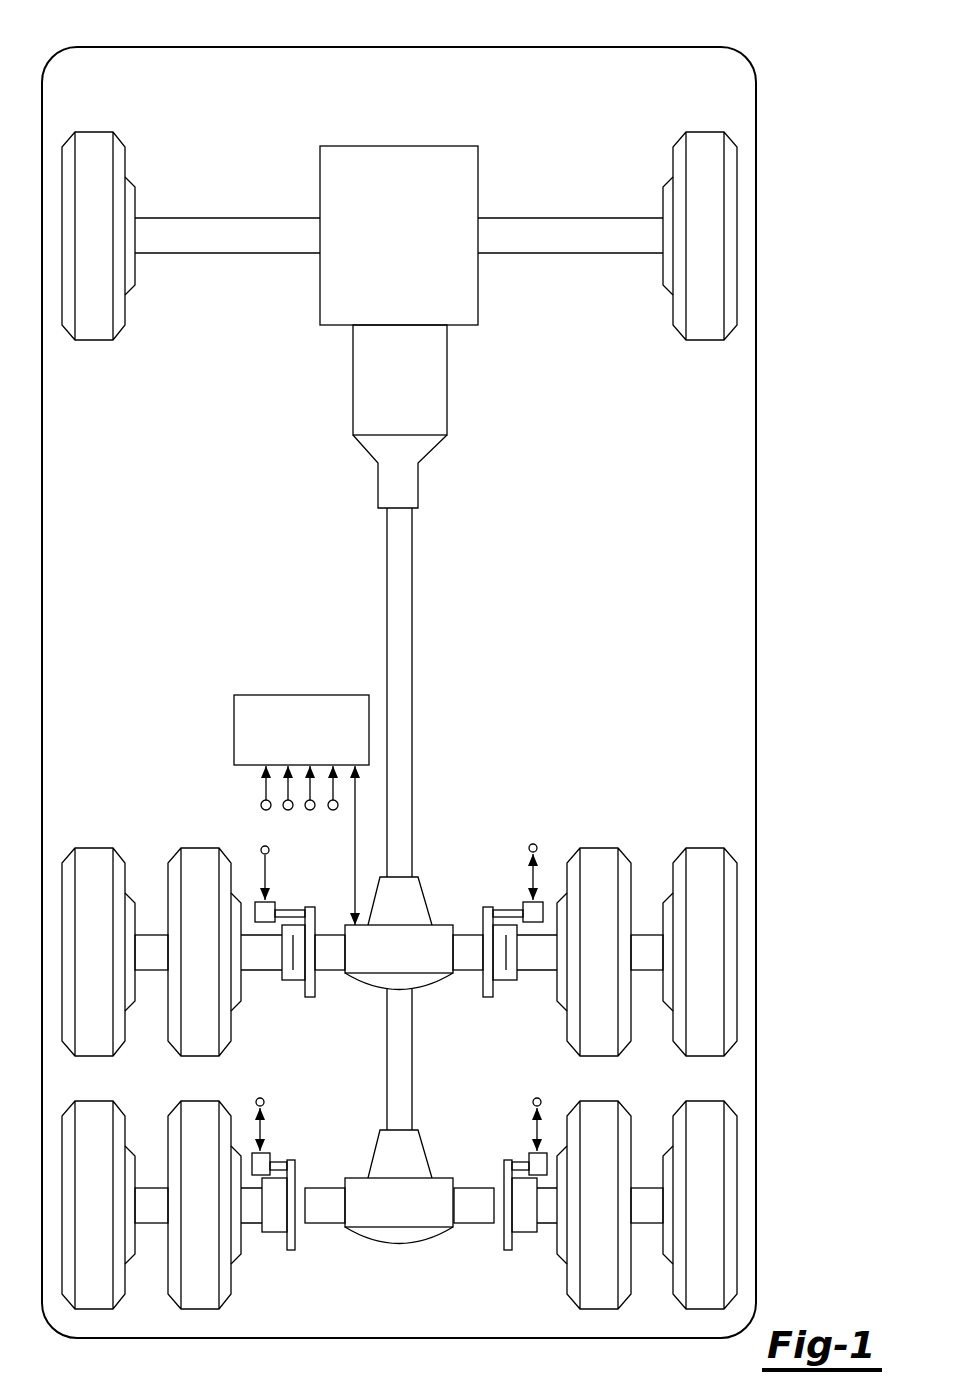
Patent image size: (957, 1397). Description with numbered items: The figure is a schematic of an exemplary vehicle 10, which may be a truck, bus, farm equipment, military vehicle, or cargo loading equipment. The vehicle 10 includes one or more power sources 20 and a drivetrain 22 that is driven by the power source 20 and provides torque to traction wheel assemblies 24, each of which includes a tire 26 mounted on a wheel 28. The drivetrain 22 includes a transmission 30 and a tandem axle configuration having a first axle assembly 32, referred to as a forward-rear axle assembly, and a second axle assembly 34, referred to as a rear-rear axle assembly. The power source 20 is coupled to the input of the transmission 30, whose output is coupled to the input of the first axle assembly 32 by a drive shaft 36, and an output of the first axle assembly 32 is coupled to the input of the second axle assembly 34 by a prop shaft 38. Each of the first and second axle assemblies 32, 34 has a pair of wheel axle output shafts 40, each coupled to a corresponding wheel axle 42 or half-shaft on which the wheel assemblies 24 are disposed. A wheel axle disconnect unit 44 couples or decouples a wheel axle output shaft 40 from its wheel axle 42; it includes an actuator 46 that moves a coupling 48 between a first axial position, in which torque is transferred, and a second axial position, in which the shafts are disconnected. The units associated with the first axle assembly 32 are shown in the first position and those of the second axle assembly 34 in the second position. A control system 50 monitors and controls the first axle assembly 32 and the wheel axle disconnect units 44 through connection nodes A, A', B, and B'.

The vehicle 10 is at (750, 55).
The power source 20 is at (408, 250).
The drivetrain 22 is at (340, 440).
The traction wheel assembly 24 is at (210, 1060).
The tire 26 is at (103, 966).
The wheel 28 is at (134, 985).
The transmission 30 is at (408, 397).
The first axle assembly 32 is at (422, 882).
The second axle assembly 34 is at (377, 1138).
The drive shaft 36 is at (412, 590).
The prop shaft 38 is at (413, 1079).
The wheel axle output shaft 40 is at (330, 972).
The wheel axle 42 is at (151, 935).
The wheel axle disconnect unit 44 is at (317, 920).
The actuator 46 is at (255, 905).
The coupling 48 is at (310, 999).
The control system 50 is at (311, 748).